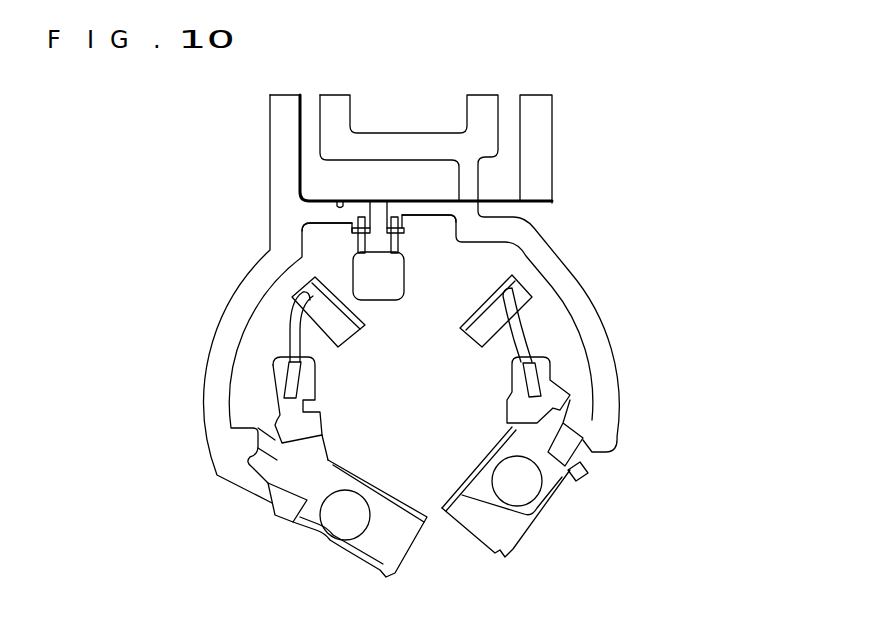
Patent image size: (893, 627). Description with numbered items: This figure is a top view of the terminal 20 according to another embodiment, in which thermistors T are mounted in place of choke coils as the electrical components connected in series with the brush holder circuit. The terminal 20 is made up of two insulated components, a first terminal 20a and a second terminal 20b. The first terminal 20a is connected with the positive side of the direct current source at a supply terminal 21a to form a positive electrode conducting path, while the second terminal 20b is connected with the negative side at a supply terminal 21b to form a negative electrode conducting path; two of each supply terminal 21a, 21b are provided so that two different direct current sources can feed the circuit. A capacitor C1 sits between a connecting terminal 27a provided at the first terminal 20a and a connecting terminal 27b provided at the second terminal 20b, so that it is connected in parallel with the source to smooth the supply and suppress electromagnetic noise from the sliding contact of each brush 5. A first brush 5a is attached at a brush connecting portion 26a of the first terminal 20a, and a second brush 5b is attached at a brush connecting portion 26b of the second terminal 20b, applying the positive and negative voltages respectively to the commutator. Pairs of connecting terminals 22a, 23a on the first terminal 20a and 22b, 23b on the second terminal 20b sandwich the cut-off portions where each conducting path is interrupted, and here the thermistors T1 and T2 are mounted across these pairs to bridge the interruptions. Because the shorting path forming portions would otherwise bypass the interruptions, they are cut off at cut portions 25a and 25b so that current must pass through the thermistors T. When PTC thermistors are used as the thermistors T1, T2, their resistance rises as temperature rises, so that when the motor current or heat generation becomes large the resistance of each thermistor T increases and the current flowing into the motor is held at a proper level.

The terminal 20 is at (407, 282).
The first terminal 20a is at (573, 282).
The second terminal 20b is at (227, 328).
The supply terminal 21a is at (472, 117).
The supply terminal 21b is at (280, 128).
The capacitor C1 is at (383, 298).
The connecting terminal 27a is at (399, 232).
The connecting terminal 27b is at (355, 230).
The brush 5 is at (412, 337).
The first brush 5a is at (473, 338).
The second brush 5b is at (347, 333).
The brush connecting portion 26a is at (533, 393).
The brush connecting portion 26b is at (297, 382).
The cut portion 25a is at (575, 390).
The cut portion 25b is at (273, 432).
The connecting terminal 22a is at (578, 463).
The connecting terminal 22b is at (287, 517).
The connecting terminal 23a is at (512, 547).
The connecting terminal 23b is at (403, 547).
The thermistor T is at (459, 531).
The thermistor T1 is at (530, 492).
The thermistor T2 is at (337, 523).